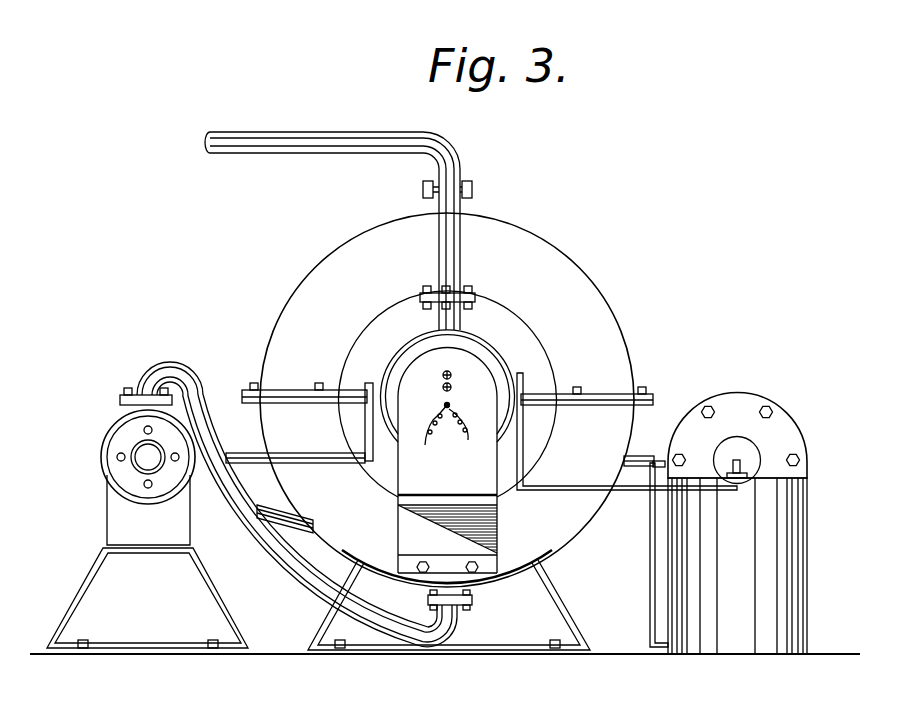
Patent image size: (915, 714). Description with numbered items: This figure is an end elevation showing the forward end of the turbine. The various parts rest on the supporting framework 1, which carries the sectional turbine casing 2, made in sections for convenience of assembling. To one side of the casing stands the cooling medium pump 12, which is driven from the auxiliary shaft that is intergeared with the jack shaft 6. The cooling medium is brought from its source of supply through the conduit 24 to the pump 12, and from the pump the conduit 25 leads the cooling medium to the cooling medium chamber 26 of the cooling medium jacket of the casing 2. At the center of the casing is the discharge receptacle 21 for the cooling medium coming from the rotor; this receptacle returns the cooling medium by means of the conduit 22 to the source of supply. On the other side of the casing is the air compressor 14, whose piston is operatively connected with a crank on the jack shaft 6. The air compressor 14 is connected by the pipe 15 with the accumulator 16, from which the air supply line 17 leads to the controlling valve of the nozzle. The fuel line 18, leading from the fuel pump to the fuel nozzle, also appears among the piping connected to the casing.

The supporting framework 1 is at (98, 597).
The turbine casing 2 is at (612, 318).
The jack shaft 6 is at (255, 452).
The cooling medium pump 12 is at (110, 443).
The air compressor 14 is at (770, 433).
The pipe 15 is at (650, 572).
The accumulator 16 is at (768, 553).
The air supply line 17 is at (568, 485).
The fuel line 18 is at (333, 455).
The discharge receptacle 21 is at (487, 349).
The conduit 22 is at (328, 146).
The conduit 24 is at (131, 471).
The conduit 25 is at (275, 548).
The cooling medium chamber 26 is at (290, 520).